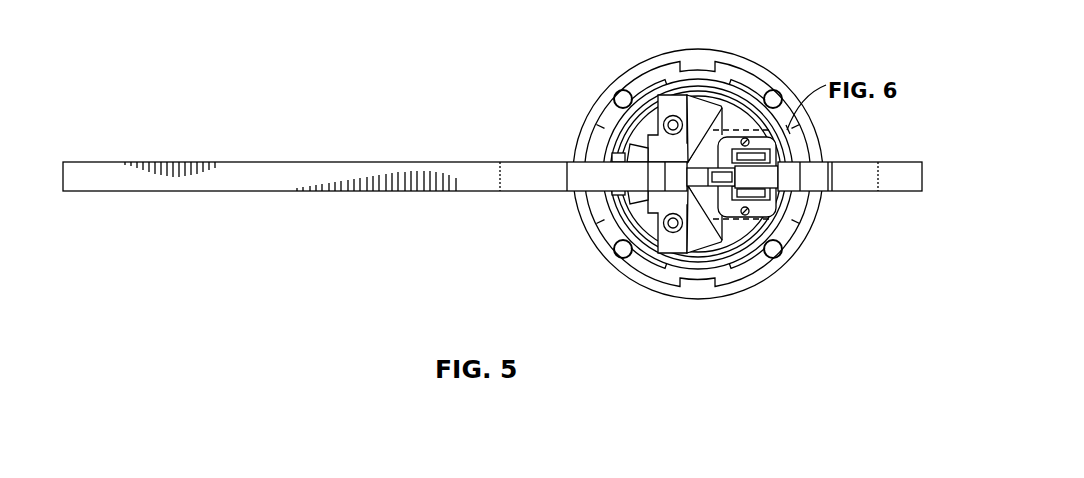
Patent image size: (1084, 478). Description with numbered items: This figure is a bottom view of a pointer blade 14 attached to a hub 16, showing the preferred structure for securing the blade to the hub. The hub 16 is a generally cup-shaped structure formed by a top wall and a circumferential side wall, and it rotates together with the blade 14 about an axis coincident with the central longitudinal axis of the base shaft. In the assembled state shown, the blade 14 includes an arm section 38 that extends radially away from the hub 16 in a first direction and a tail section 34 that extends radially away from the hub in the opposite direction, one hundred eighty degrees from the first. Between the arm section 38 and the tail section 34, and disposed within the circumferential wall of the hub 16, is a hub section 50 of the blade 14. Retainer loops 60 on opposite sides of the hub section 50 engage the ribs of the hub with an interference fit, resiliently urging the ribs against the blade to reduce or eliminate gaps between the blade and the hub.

The blade 14 is at (322, 162).
The hub 16 is at (745, 63).
The tail section 34 is at (888, 165).
The arm section 38 is at (184, 183).
The hub section 50 is at (753, 177).
The retainer loops 60 is at (778, 150).